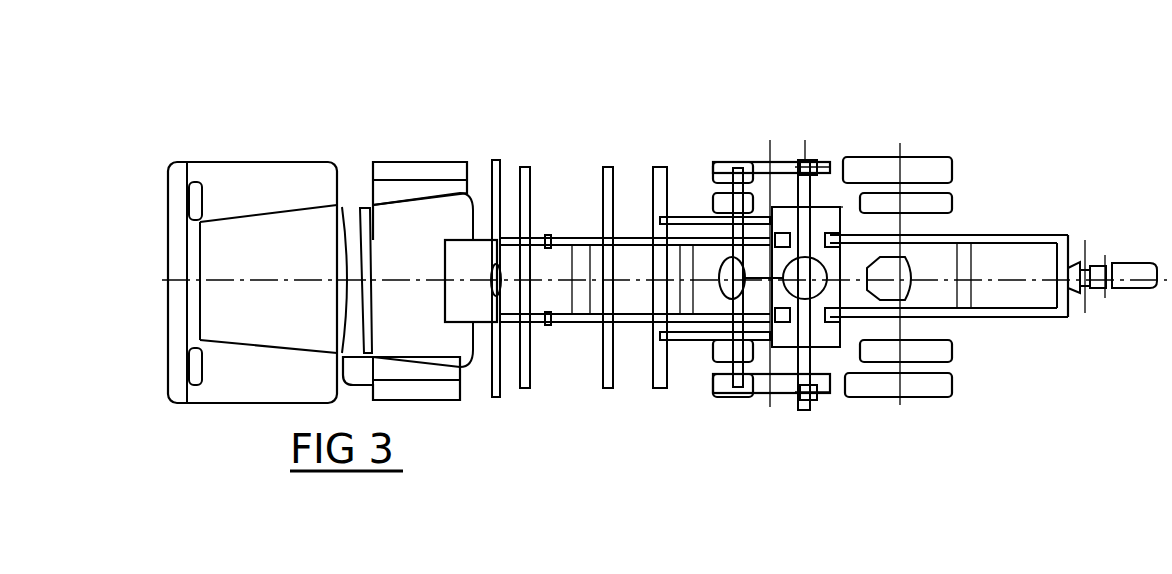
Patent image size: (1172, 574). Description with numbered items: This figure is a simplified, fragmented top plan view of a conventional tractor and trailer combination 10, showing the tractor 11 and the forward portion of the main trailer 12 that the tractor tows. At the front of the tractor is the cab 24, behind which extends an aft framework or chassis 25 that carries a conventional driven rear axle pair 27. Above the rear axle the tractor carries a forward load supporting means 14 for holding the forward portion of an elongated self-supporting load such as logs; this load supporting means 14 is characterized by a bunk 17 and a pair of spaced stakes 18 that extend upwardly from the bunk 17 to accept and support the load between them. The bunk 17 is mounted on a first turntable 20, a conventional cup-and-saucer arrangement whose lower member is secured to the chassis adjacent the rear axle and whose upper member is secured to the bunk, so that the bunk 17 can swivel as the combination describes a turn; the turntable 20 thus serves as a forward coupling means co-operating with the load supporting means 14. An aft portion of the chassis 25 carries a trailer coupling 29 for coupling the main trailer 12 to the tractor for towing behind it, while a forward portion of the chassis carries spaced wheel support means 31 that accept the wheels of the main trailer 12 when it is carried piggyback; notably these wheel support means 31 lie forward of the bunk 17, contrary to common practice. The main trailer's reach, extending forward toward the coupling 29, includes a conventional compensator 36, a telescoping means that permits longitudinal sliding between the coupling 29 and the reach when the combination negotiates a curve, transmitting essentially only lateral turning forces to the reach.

The tractor and trailer combination 10 is at (743, 95).
The tractor 11 is at (322, 145).
The trailer 12 is at (1140, 290).
The forward load supporting means 14 is at (800, 400).
The bunk 17 is at (838, 250).
The stakes 18 is at (810, 163).
The first turntable 20 is at (830, 286).
The cab 24 is at (440, 340).
The aft framework or chassis 25 is at (640, 322).
The driven rear axle pair 27 is at (900, 148).
The trailer coupling 29 is at (1080, 268).
The wheel support means 31 is at (605, 168).
The compensator 36 is at (1100, 265).